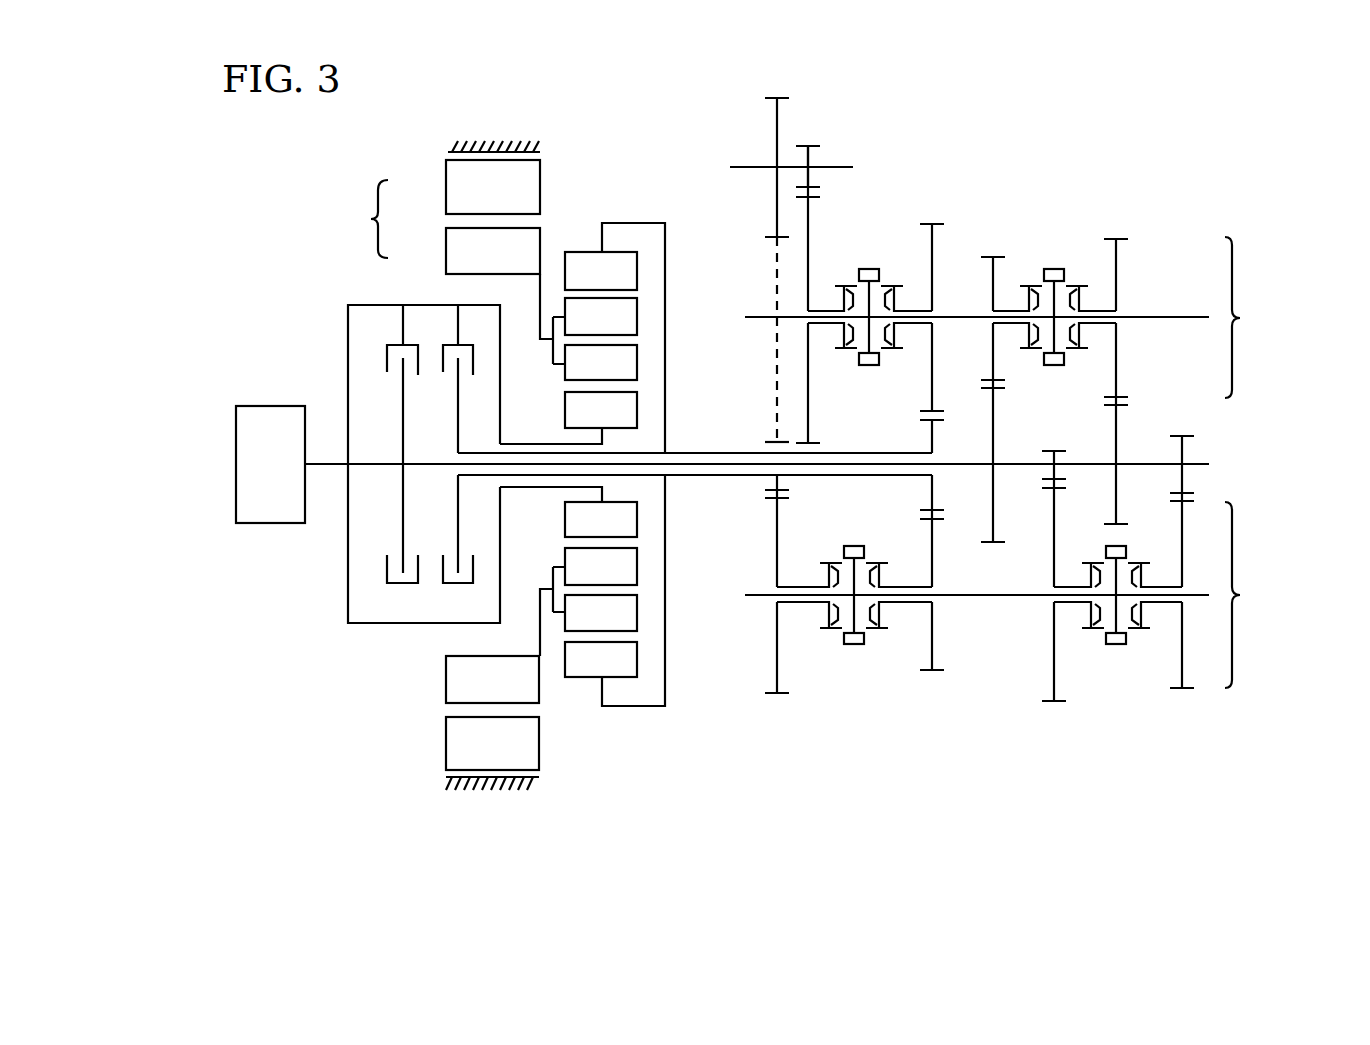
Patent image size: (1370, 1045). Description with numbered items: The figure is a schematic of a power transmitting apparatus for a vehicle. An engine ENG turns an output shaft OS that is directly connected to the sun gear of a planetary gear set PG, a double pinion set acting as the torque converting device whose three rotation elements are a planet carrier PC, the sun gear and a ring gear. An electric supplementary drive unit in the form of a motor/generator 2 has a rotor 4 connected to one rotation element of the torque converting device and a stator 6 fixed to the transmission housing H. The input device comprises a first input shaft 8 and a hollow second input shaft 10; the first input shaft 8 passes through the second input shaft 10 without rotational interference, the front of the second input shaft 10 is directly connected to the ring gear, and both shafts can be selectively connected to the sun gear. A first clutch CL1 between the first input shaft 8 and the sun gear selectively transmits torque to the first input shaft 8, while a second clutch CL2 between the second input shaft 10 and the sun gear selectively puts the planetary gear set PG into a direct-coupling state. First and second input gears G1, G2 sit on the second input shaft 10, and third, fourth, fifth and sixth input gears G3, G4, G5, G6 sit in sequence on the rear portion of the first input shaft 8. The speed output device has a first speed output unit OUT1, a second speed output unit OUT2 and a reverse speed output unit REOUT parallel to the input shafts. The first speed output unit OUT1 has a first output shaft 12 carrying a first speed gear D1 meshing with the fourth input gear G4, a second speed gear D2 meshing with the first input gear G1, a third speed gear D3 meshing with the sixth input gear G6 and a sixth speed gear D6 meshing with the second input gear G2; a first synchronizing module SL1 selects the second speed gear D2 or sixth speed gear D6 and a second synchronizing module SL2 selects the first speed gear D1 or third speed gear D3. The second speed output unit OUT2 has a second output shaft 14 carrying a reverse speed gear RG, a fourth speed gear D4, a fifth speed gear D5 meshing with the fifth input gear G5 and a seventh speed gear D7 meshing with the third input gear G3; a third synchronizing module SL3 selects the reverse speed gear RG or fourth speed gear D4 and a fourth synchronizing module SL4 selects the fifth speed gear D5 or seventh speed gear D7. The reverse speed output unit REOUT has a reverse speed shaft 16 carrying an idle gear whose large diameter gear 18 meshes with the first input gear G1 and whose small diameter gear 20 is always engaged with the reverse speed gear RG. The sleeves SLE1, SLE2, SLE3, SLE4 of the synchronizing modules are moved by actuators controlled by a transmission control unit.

The motor/generator 2 is at (371, 219).
The rotor 4 is at (443, 252).
The stator 6 is at (443, 186).
The first input shaft 8 is at (696, 467).
The second input shaft 10 is at (739, 478).
The first output shaft 12 is at (1195, 593).
The second output shaft 14 is at (1170, 315).
The reverse speed shaft 16 is at (752, 168).
The large diameter gear 18 is at (772, 122).
The small diameter gear 20 is at (815, 147).
The transmission housing H is at (512, 142).
The planetary gear set PG is at (640, 208).
The output shaft OS is at (325, 462).
The engine ENG is at (270, 464).
The first clutch CL1 is at (388, 444).
The second clutch CL2 is at (469, 444).
The planet carrier PC is at (556, 358).
The reverse speed output unit REOUT is at (832, 104).
The reverse speed gear RG is at (806, 290).
The first input gear G1 is at (770, 442).
The second input gear G2 is at (930, 431).
The third input gear G3 is at (991, 431).
The fourth input gear G4 is at (1052, 452).
The fifth input gear G5 is at (1120, 418).
The sixth input gear G6 is at (1186, 448).
The first speed gear D1 is at (1053, 650).
The second speed gear D2 is at (775, 648).
The third speed gear D3 is at (1185, 627).
The fourth speed gear D4 is at (935, 258).
The fifth speed gear D5 is at (1120, 250).
The sixth speed gear D6 is at (935, 625).
The seventh speed gear D7 is at (990, 290).
The first synchronizing module SL1 is at (892, 680).
The second synchronizing module SL2 is at (1147, 678).
The third synchronizing module SL3 is at (890, 258).
The fourth synchronizing module SL4 is at (1084, 256).
The sleeve SLE1 is at (855, 648).
The sleeve SLE2 is at (1117, 648).
The sleeve SLE3 is at (863, 268).
The sleeve SLE4 is at (1052, 268).
The first speed output unit OUT1 is at (1259, 595).
The second speed output unit OUT2 is at (1259, 317).